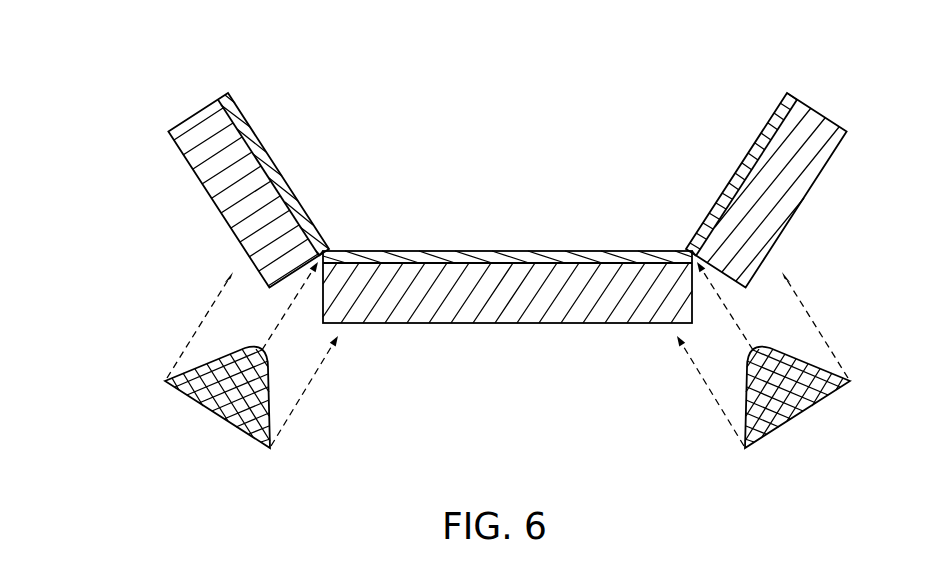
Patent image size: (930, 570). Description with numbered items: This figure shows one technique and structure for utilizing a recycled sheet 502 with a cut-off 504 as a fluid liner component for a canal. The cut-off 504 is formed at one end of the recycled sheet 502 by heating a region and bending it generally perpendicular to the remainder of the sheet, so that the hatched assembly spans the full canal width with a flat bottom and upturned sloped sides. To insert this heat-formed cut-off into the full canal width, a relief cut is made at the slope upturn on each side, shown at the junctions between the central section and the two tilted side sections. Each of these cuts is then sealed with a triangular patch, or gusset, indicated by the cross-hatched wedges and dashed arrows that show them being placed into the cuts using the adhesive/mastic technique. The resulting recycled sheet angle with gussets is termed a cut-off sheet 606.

The cut-off sheet 606 is at (95, 41).
The recycled sheet 502 is at (156, 132).
The cut-off 504 is at (260, 140).